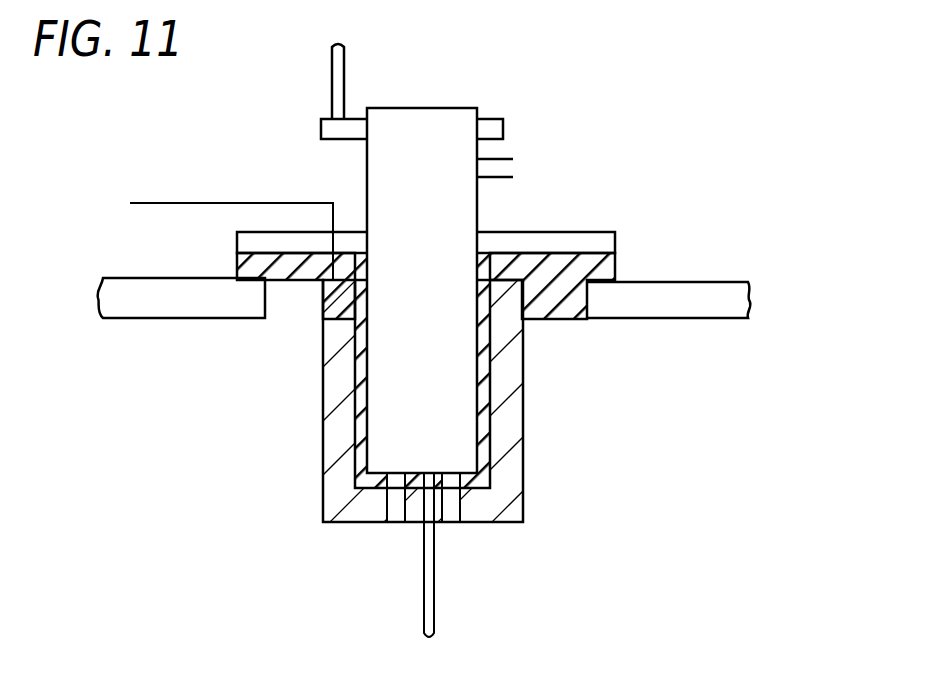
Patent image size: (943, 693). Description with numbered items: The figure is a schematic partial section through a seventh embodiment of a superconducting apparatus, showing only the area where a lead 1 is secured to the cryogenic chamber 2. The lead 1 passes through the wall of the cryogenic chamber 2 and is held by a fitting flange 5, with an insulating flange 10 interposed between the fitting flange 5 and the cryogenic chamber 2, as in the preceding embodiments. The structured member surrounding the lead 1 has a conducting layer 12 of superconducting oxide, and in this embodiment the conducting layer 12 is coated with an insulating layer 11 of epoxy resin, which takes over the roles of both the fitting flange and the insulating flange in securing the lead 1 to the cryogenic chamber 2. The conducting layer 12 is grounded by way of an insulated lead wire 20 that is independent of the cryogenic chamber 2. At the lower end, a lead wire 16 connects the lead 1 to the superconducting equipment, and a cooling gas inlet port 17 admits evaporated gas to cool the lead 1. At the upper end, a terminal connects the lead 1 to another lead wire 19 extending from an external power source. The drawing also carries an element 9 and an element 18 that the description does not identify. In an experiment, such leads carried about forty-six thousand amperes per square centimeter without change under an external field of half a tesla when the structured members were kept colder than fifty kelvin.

The lead 1 is at (457, 381).
The cryogenic chamber 2 is at (707, 290).
The fitting flange 5 is at (589, 240).
The electrode leads 9 is at (513, 170).
The insulating flange 10 is at (607, 272).
The insulating layer 11 is at (476, 512).
The conducting layer 12 is at (515, 477).
The lead wire 16 is at (436, 608).
The cooling gas inlet port 17 is at (395, 512).
The flange 18 is at (502, 132).
The lead wire 19 is at (336, 88).
The insulated lead wire 20 is at (211, 203).